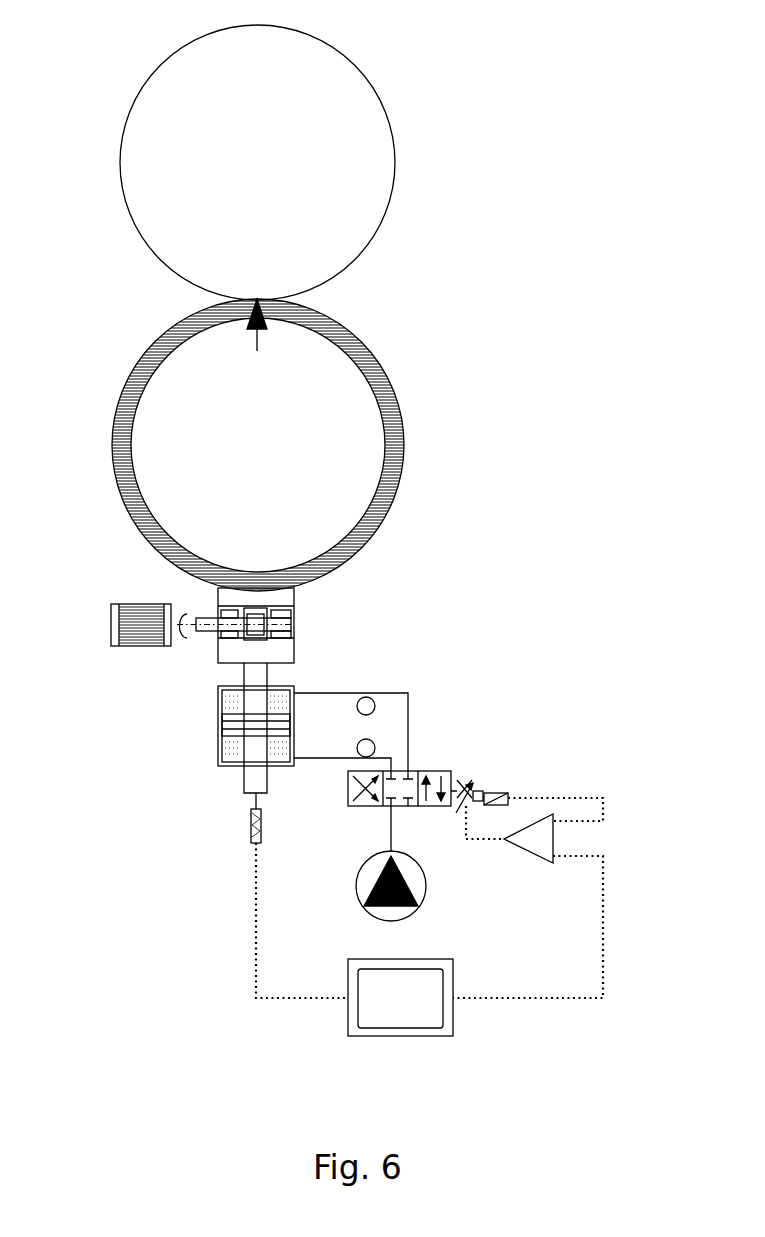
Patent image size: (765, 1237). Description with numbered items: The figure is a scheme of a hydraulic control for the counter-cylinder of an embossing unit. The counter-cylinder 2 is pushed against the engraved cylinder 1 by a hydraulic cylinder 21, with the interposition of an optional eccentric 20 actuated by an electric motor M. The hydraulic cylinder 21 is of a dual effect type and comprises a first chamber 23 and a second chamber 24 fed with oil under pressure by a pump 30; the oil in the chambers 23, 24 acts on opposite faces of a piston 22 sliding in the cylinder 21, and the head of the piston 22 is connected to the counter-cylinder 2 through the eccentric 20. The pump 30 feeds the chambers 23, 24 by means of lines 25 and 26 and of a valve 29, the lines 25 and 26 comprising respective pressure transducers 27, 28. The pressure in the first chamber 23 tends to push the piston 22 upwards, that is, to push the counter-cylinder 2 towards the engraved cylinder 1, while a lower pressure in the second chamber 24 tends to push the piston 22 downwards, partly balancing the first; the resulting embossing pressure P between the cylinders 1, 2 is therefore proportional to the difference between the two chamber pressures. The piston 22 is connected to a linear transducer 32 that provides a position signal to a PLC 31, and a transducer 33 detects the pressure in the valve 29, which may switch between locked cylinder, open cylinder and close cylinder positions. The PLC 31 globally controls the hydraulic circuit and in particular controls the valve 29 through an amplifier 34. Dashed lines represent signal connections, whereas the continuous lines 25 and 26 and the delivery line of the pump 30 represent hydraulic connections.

The engraved cylinder 1 is at (342, 83).
The counter-cylinder 2 is at (370, 370).
The embossing pressure P is at (257, 341).
The electric motor M is at (132, 612).
The eccentric 20 is at (283, 625).
The hydraulic cylinder 21 is at (178, 784).
The piston 22 is at (242, 780).
The first chamber 23 is at (217, 747).
The second chamber 24 is at (217, 700).
The line 25 is at (317, 690).
The line 26 is at (320, 758).
The pressure transducer 27 is at (373, 700).
The pressure transducer 28 is at (360, 738).
The valve 29 is at (455, 773).
The pump 30 is at (427, 887).
The PLC 31 is at (428, 1035).
The linear transducer 32 is at (255, 830).
The transducer 33 is at (493, 787).
The amplifier 34 is at (537, 850).